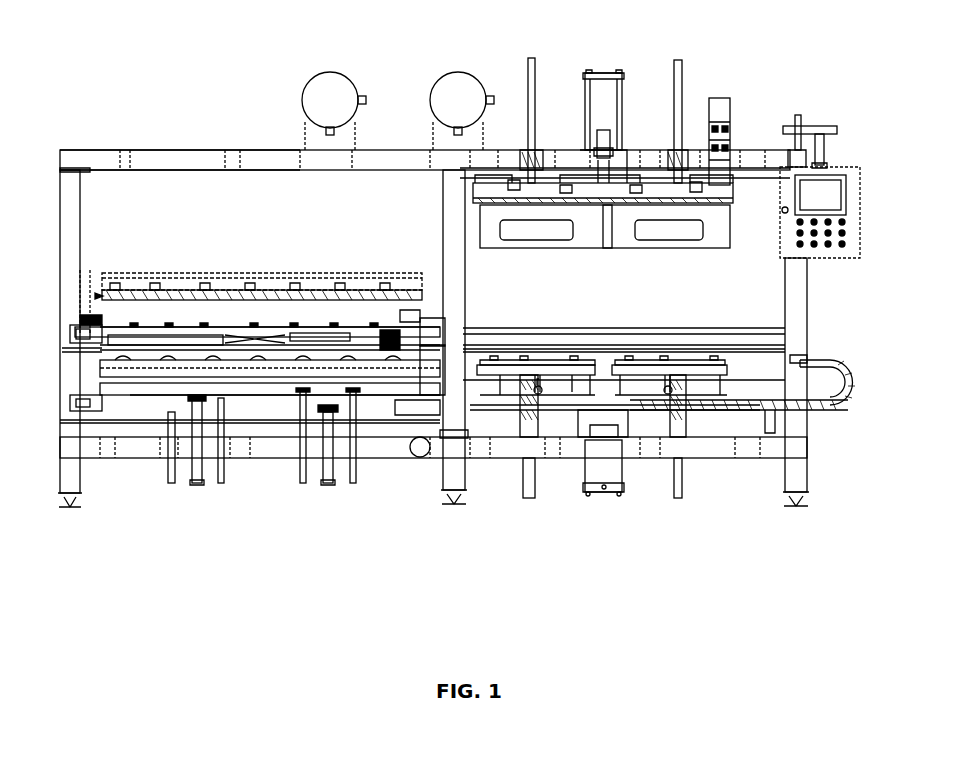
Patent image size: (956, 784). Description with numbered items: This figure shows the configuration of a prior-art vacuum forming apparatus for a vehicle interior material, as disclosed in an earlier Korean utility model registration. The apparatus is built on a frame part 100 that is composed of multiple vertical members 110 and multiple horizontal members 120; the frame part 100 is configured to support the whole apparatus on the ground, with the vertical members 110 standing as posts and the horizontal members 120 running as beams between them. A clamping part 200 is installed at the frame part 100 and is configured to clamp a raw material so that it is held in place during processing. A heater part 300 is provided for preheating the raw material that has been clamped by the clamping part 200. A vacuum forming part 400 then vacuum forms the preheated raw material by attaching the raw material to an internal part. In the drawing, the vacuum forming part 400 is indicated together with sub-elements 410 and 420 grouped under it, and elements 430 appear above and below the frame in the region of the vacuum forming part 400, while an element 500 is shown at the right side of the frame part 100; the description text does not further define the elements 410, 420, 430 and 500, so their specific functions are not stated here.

The frame part 100 is at (28, 92).
The vertical members 110 is at (63, 187).
The horizontal members 120 is at (97, 158).
The clamping part 200 is at (110, 322).
The heater part 300 is at (135, 272).
The vacuum forming part 400 is at (891, 276).
The lower pressing part 410 is at (713, 388).
The upper pressing part 420 is at (722, 238).
The cylinder 430 is at (623, 95).
The controller 500 is at (857, 204).